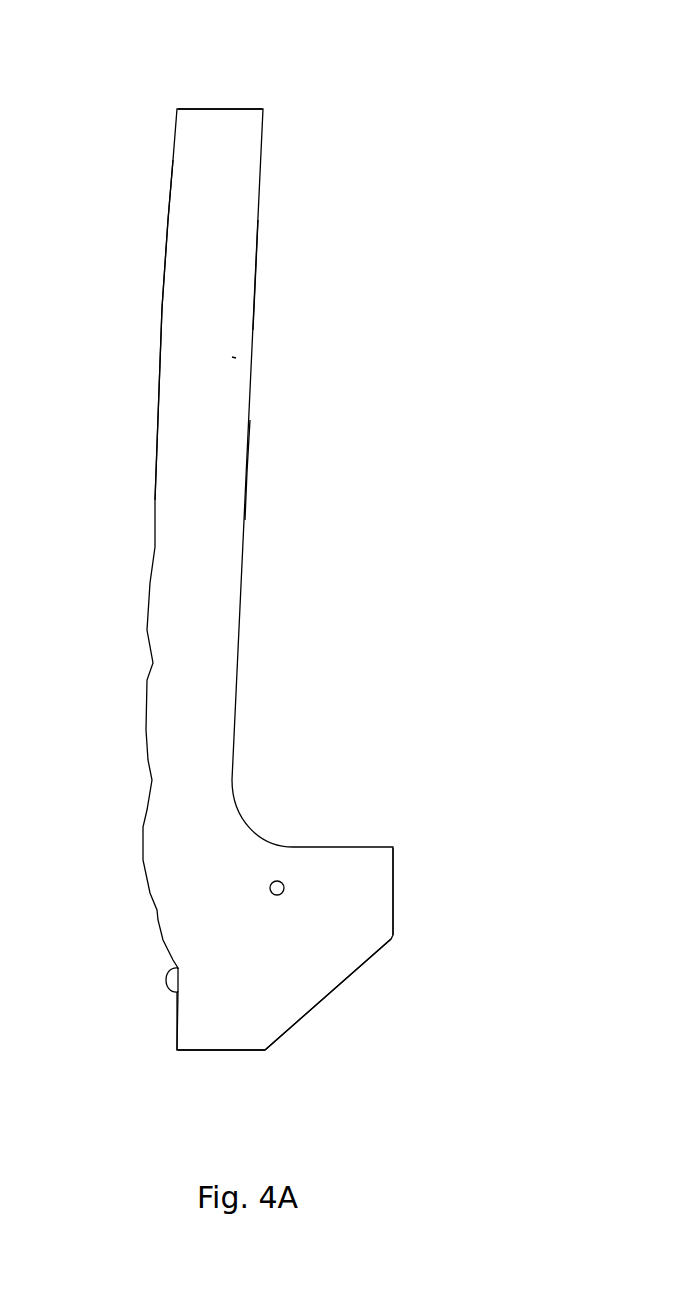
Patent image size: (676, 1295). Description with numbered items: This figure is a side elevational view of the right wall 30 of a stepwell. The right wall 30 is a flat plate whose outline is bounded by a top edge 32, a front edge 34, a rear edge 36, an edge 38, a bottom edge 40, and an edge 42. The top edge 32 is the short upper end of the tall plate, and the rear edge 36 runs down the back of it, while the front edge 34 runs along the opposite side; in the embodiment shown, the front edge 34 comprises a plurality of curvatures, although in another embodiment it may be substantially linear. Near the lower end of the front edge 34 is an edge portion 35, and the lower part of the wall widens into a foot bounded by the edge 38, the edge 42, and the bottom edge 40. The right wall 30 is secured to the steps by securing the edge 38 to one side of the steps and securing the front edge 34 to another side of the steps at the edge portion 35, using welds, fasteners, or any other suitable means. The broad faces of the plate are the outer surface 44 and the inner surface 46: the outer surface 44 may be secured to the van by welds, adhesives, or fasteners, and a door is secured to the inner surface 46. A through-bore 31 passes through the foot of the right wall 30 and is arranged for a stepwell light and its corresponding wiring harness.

The right wall 30 is at (432, 148).
The through-bore 31 is at (282, 873).
The top edge 32 is at (210, 109).
The front edge 34 is at (162, 308).
The edge portion 35 is at (168, 1040).
The rear edge 36 is at (247, 472).
The edge 38 is at (393, 898).
The bottom edge 40 is at (217, 1050).
The edge 42 is at (323, 998).
The outer surface 44 is at (232, 357).
The inner surface 46 is at (256, 287).